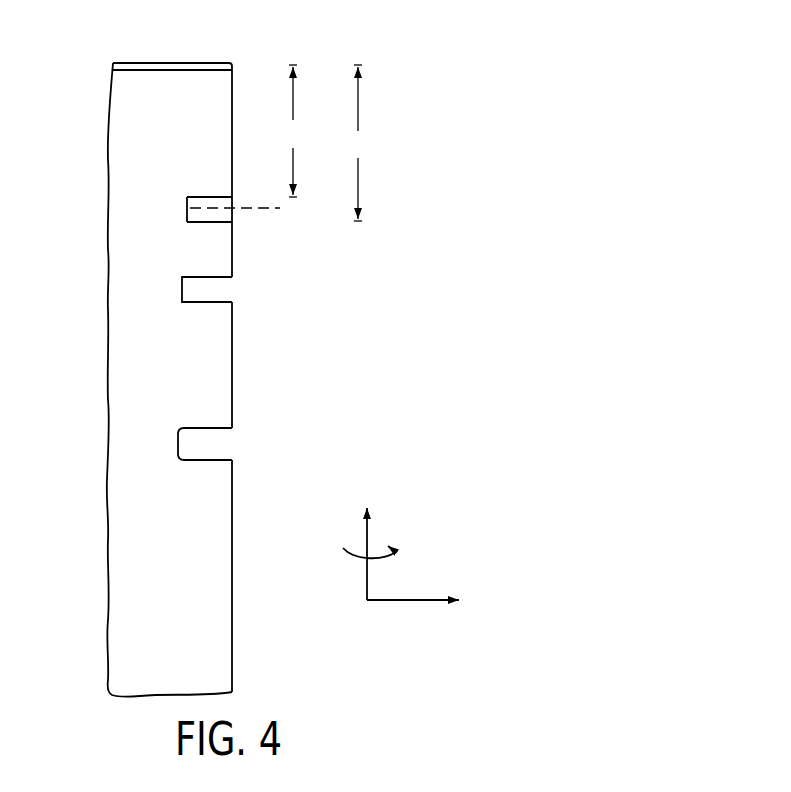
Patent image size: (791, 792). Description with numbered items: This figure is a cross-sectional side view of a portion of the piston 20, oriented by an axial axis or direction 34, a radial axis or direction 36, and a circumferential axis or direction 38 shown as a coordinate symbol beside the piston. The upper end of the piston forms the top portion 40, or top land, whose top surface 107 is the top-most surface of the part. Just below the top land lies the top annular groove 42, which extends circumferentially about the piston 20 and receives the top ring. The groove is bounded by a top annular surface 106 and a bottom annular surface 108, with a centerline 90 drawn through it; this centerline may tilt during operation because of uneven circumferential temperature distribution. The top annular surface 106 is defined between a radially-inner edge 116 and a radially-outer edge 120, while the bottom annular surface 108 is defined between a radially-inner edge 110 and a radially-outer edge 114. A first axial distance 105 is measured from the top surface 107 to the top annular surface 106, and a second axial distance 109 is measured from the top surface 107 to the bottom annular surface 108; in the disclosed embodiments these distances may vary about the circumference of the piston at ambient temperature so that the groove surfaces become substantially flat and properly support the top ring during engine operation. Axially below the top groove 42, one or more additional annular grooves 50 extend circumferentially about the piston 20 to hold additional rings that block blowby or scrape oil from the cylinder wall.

The piston 20 is at (393, 63).
The axial axis or direction 34 is at (367, 532).
The radial axis or direction 36 is at (413, 600).
The circumferential axis or direction 38 is at (347, 577).
The top portion 40 is at (123, 100).
The top annular groove 42 is at (291, 249).
The additional annular grooves 50 is at (231, 291).
The centerline 90 is at (270, 210).
The first axial distance 105 is at (293, 131).
The top annular surface 106 is at (208, 197).
The top surface 107 is at (168, 64).
The bottom annular surface 108 is at (207, 224).
The second axial distance 109 is at (358, 143).
The radially-inner edge of the bottom annular surface 110 is at (187, 223).
The radially-outer edge of the bottom annular surface 114 is at (237, 224).
The radially-inner edge of the top annular surface 116 is at (187, 197).
The radially-outer edge of the top annular surface 120 is at (233, 197).